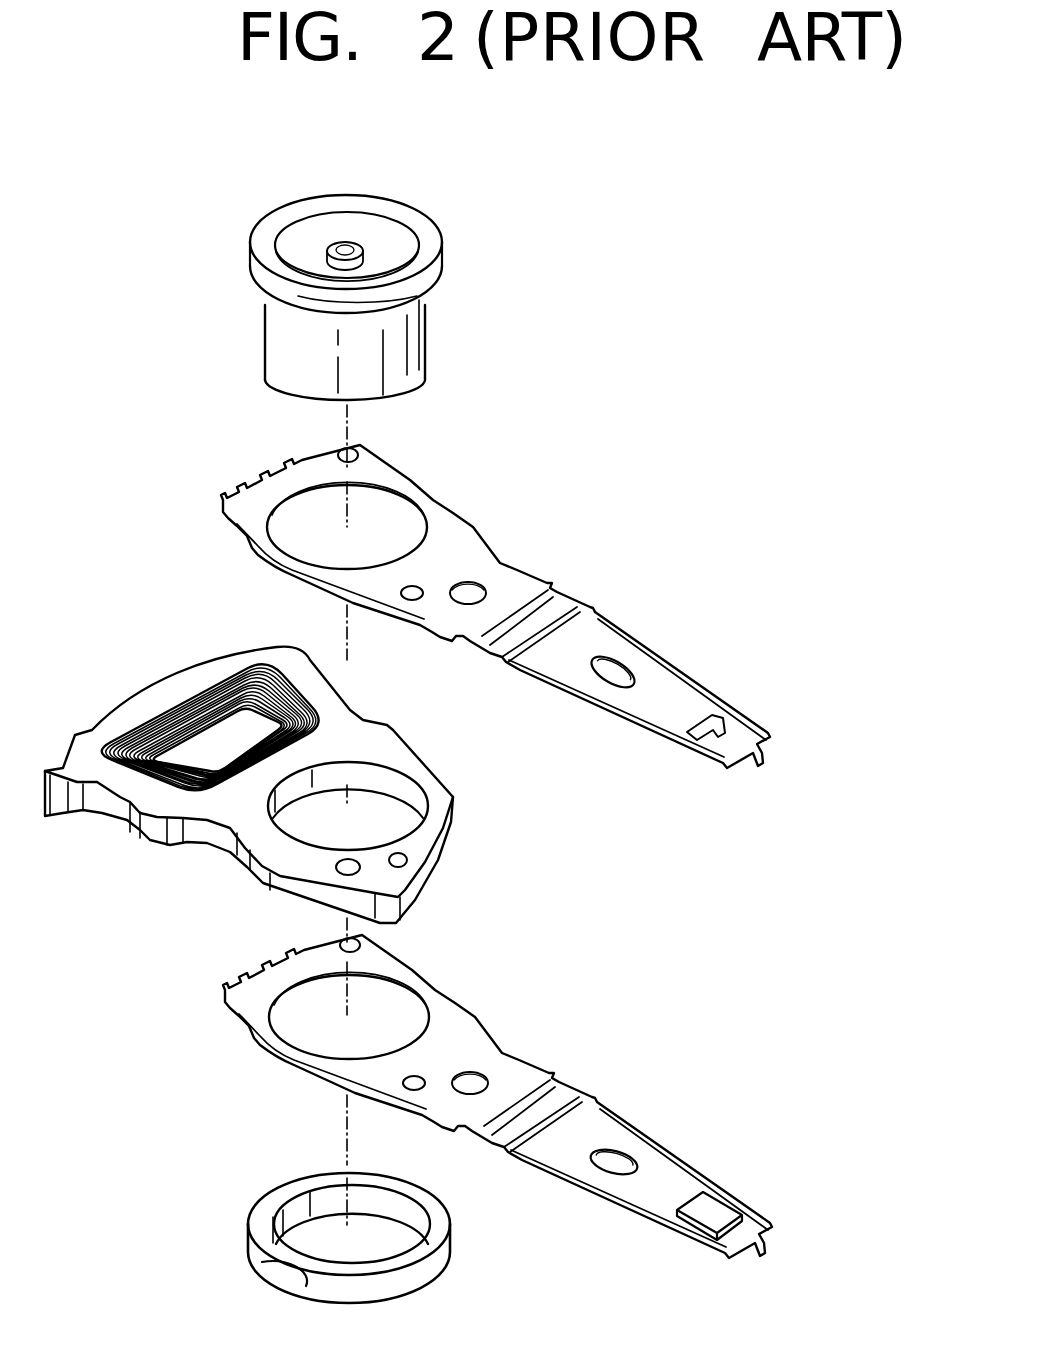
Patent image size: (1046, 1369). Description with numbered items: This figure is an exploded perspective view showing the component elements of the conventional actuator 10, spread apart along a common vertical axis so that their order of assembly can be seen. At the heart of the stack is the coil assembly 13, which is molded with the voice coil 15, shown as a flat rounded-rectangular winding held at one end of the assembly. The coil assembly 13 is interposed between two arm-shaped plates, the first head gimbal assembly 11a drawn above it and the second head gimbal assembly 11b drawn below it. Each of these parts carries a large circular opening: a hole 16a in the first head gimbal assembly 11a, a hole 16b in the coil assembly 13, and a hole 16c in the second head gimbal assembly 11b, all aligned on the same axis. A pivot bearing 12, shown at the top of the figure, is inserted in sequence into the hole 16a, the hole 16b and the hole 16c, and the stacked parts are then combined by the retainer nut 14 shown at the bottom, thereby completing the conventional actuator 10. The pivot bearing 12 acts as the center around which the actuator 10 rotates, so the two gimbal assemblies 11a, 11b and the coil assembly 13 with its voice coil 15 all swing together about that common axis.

The conventional actuator 10 is at (590, 425).
The first head gimbal assembly 11a is at (675, 688).
The second head gimbal assembly 11b is at (670, 1180).
The pivot bearing 12 is at (275, 321).
The coil assembly 13 is at (80, 743).
The retainer nut 14 is at (247, 1230).
The voice coil 15 is at (203, 673).
The hole 16a is at (390, 527).
The hole 16b is at (387, 813).
The hole 16c is at (390, 1025).